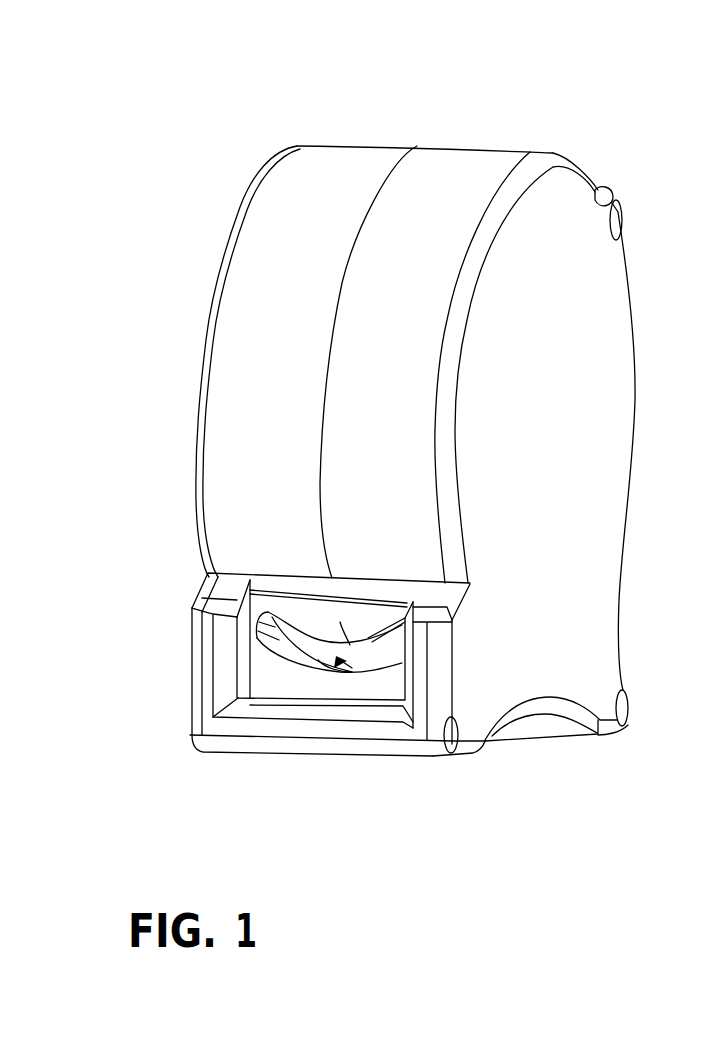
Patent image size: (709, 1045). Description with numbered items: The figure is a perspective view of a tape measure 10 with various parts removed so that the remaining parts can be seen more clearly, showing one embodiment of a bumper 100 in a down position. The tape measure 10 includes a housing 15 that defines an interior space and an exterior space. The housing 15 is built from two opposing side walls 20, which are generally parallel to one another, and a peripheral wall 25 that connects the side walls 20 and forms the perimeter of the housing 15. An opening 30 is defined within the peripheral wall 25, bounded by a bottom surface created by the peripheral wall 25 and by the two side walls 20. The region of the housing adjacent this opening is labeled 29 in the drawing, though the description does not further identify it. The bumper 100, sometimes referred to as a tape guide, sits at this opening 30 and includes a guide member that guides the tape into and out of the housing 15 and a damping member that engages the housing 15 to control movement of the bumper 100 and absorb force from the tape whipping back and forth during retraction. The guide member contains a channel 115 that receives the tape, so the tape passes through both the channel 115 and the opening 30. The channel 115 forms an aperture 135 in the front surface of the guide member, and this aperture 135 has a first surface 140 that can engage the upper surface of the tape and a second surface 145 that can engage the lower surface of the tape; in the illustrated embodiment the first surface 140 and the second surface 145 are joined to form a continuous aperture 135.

The tape measure 10 is at (268, 93).
The housing 15 is at (523, 168).
The side walls 20 is at (207, 320).
The peripheral wall 25 is at (340, 167).
The bottom cutout arch 29 is at (572, 637).
The opening 30 is at (226, 691).
The bumper 100 is at (327, 610).
The channel 115 is at (378, 635).
The aperture 135 is at (298, 644).
The first surface 140 is at (347, 640).
The second surface 145 is at (343, 676).